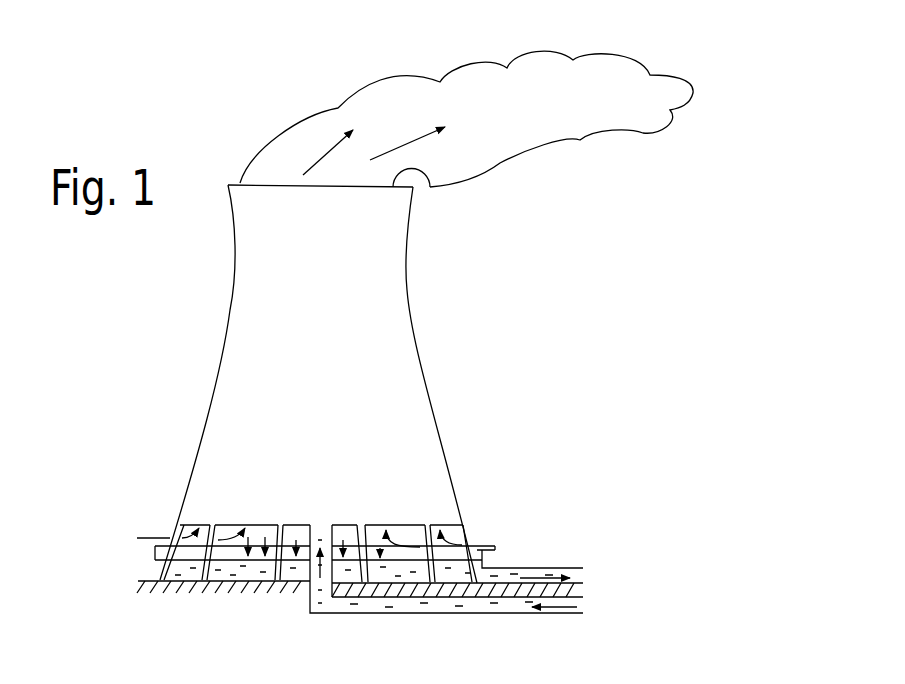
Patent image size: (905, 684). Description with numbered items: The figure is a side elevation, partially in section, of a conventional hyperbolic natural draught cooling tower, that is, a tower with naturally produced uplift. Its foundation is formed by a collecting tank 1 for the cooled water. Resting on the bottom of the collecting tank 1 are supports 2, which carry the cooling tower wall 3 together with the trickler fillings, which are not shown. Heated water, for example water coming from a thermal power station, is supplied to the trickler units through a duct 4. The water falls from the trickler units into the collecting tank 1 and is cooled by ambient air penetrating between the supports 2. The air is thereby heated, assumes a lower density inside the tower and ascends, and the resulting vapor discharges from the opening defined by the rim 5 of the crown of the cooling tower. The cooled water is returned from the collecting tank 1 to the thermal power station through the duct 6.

The collecting tank 1 is at (160, 557).
The supports 2 is at (172, 537).
The cooling tower wall 3 is at (450, 478).
The duct 4 is at (408, 613).
The rim 5 is at (428, 187).
The duct 6 is at (545, 568).